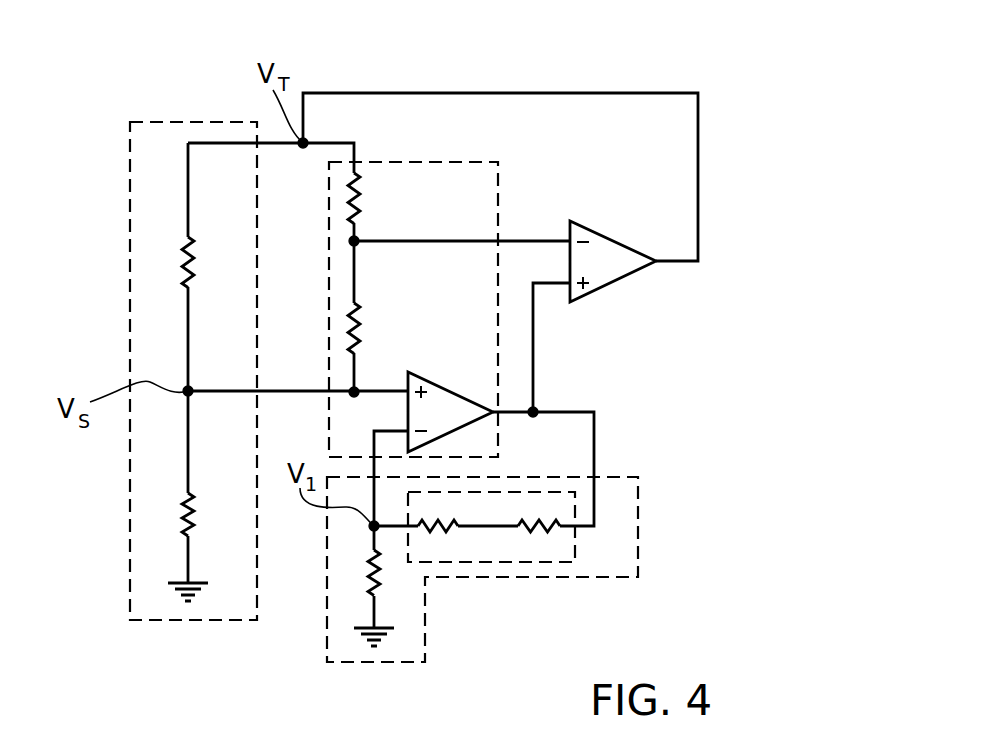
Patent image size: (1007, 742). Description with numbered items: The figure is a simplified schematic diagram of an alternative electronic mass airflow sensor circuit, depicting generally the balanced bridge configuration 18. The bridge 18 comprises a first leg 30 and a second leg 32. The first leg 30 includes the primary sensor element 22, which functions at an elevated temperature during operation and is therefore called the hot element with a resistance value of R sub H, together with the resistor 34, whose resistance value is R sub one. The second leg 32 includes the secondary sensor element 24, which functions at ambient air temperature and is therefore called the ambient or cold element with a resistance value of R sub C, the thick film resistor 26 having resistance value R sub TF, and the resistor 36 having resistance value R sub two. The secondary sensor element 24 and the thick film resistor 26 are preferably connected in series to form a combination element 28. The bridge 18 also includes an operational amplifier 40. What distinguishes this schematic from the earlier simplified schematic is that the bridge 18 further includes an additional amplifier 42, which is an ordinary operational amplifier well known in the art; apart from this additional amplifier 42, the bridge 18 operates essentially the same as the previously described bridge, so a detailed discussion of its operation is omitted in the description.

The balanced bridge configuration 18 is at (568, 133).
The first leg 30 is at (196, 371).
The primary sensor element 22 is at (193, 289).
The resistor 34 is at (189, 490).
The additional amplifier 42 is at (449, 285).
The operational amplifier 40 is at (594, 284).
The combination element 28 is at (505, 542).
The second leg 32 is at (568, 497).
The thick film resistor 26 is at (479, 503).
The secondary sensor element 24 is at (579, 497).
The resistor 36 is at (347, 600).